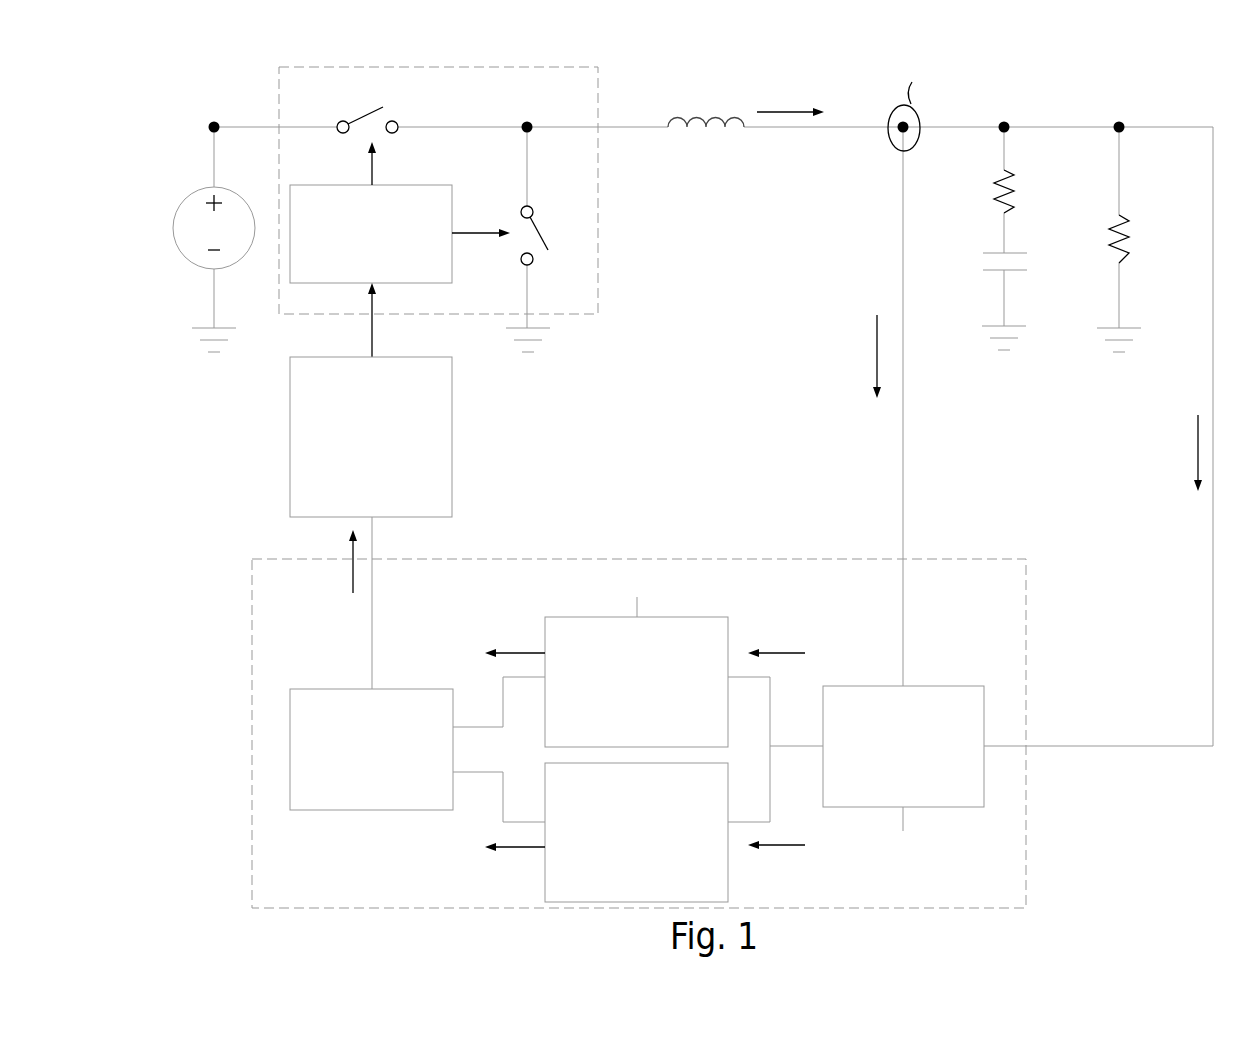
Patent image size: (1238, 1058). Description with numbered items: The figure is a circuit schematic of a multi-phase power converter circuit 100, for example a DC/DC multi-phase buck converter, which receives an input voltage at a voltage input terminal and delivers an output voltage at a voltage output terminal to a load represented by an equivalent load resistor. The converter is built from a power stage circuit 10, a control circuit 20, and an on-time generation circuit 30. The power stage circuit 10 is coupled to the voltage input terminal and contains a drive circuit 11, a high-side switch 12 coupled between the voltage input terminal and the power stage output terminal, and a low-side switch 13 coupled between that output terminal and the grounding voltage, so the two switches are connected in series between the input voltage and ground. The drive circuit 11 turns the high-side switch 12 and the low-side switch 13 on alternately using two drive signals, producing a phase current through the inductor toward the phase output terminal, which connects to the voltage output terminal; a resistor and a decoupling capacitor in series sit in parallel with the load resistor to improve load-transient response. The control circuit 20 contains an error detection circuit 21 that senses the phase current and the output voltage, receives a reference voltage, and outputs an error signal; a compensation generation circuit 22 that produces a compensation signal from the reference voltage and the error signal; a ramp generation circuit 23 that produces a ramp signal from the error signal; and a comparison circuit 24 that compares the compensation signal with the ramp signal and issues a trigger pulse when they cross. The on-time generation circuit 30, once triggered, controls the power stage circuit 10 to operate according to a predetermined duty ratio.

The multi-phase power converter circuit 100 is at (68, 87).
The power stage circuit 10 is at (598, 118).
The drive circuit 11 is at (383, 264).
The high-side switch 12 is at (367, 103).
The low-side switch 13 is at (553, 235).
The control circuit 20 is at (722, 559).
The error detection circuit 21 is at (916, 788).
The compensation generation circuit 22 is at (653, 742).
The ramp generation circuit 23 is at (653, 890).
The comparison circuit 24 is at (385, 795).
The on-time generation circuit 30 is at (385, 499).